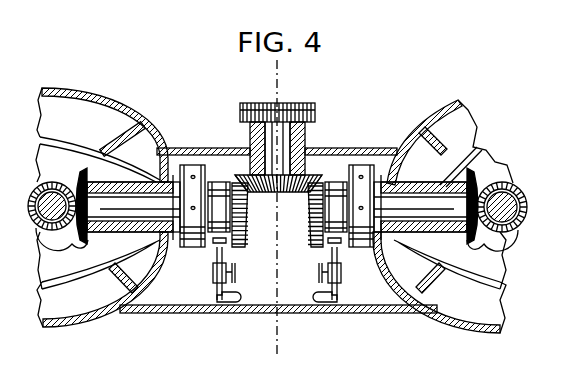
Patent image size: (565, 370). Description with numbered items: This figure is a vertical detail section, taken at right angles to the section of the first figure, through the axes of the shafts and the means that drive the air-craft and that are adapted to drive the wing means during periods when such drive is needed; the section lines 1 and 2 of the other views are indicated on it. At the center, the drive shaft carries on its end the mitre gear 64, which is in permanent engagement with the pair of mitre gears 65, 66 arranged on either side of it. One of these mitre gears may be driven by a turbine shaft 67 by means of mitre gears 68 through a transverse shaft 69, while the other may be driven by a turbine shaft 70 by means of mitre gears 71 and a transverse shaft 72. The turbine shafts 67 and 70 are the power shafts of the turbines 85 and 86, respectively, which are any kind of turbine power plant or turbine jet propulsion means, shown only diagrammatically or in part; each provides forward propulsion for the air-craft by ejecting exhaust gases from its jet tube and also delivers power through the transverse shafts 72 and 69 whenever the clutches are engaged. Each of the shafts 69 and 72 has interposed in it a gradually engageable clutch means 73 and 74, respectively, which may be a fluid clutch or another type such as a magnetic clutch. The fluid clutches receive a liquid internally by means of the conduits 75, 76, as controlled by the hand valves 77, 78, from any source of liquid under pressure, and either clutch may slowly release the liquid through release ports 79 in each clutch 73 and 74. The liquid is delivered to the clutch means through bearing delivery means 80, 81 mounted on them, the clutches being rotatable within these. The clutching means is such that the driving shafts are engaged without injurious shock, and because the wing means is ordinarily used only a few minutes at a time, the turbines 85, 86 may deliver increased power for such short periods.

The section line 1— 1 is at (283, 67).
The section line 2— 2 is at (563, 118).
The mitre gear 64 is at (313, 177).
The mitre gear 65 is at (242, 240).
The mitre gear 66 is at (317, 238).
The turbine shaft 67 is at (56, 190).
The mitre gears 68 is at (80, 247).
The transverse shaft 69 is at (133, 200).
The turbine shaft 70 is at (517, 183).
The mitre gears 71 is at (471, 257).
The transverse shaft 72 is at (407, 207).
The gradually engageable clutch means 73 is at (197, 257).
The gradually engageable clutch means 74 is at (357, 258).
The conduit 75 is at (215, 295).
The conduit 76 is at (338, 300).
The hand valve 77 is at (235, 272).
The hand valve 78 is at (322, 273).
The release ports 79 is at (190, 168).
The bearing delivery means 80 is at (217, 187).
The bearing delivery means 81 is at (337, 187).
The turbine 85 is at (87, 90).
The turbine 86 is at (439, 106).